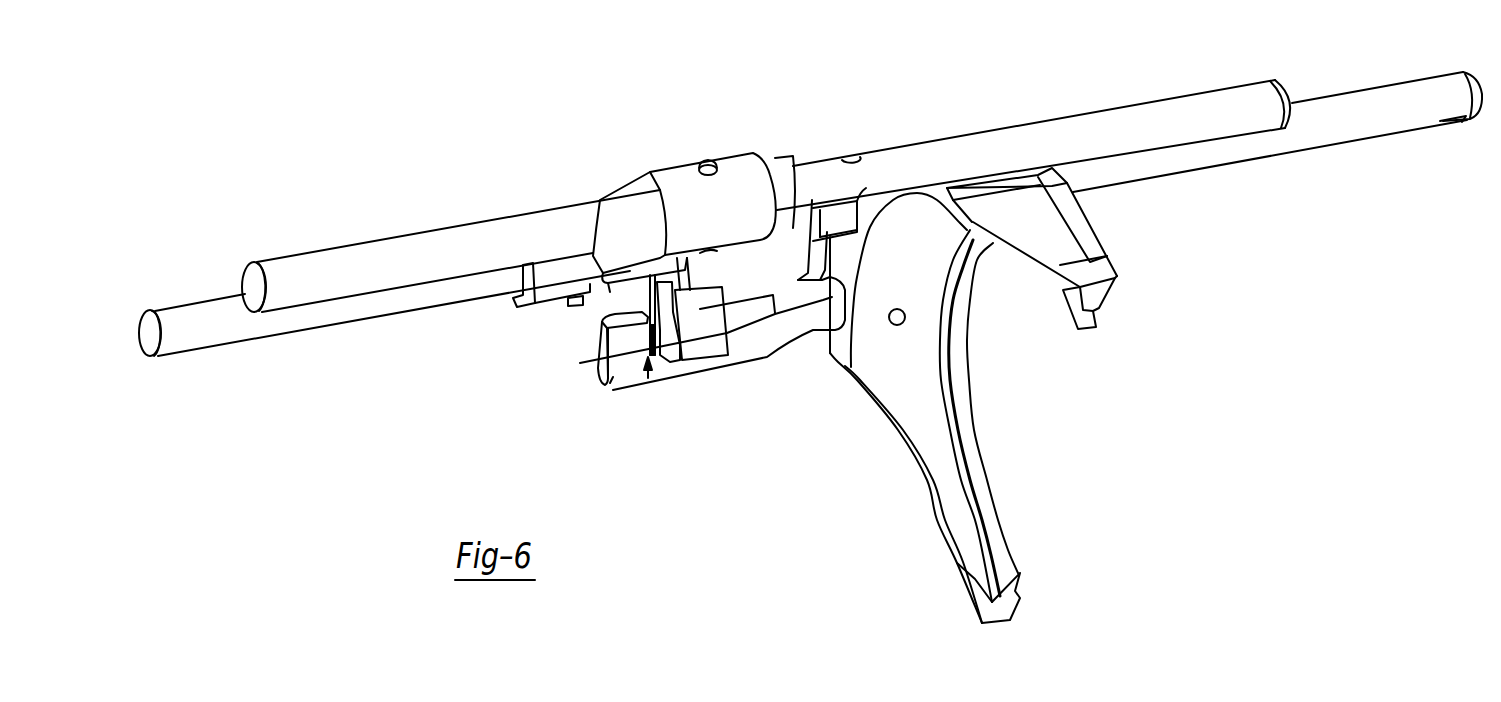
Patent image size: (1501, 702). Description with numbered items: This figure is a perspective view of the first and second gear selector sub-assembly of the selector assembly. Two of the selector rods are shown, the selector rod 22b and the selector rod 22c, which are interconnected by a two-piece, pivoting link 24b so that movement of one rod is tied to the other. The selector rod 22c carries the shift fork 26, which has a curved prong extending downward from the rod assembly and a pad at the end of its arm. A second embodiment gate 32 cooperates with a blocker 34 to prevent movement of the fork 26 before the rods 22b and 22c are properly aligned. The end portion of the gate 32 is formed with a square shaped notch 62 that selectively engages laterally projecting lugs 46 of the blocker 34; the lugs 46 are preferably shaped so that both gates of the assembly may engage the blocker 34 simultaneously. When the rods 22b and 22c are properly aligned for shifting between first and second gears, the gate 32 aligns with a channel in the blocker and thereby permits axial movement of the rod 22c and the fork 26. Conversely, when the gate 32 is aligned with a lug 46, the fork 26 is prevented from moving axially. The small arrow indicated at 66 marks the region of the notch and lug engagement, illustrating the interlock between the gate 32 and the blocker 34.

The selector rod 22b is at (1183, 113).
The selector rod 22c is at (1390, 110).
The two-piece pivoting link 24b is at (675, 172).
The shift fork 26 is at (1097, 303).
The gate 32 is at (748, 342).
The blocker 34 is at (798, 237).
The lugs 46 is at (670, 347).
The square shaped notch 62 is at (645, 352).
The interlock pin 66 is at (648, 378).